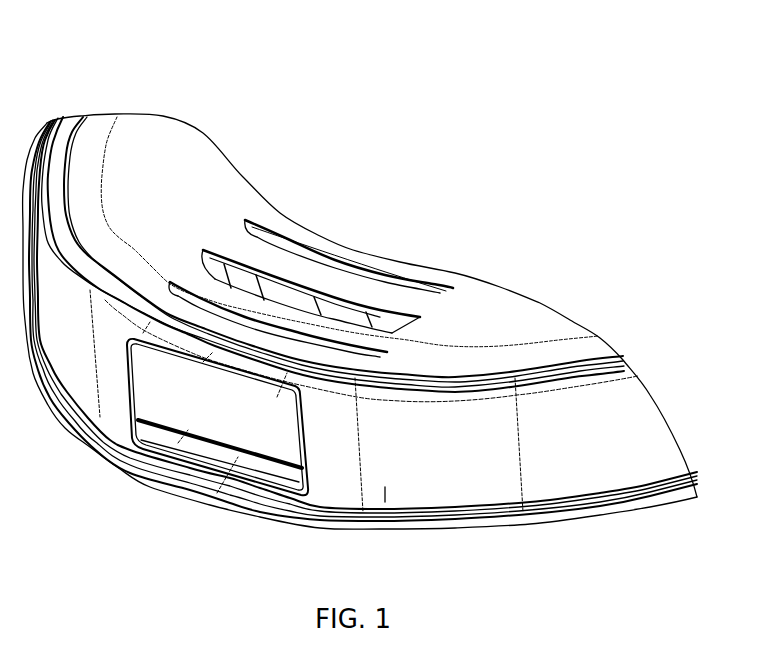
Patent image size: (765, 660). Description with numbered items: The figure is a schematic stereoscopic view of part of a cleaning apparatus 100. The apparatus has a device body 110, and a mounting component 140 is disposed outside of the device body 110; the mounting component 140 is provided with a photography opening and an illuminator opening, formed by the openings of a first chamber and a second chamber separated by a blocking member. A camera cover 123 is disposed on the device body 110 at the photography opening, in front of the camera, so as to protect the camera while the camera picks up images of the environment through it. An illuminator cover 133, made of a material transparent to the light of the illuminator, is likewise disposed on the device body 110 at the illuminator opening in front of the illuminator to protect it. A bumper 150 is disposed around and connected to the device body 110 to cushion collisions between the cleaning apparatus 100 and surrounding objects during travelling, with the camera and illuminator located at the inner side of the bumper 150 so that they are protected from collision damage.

The cleaning apparatus 100 is at (119, 56).
The device body 110 is at (472, 290).
The camera cover 123 is at (153, 478).
The illuminator cover 133 is at (213, 495).
The mounting component 140 is at (257, 510).
The bumper 150 is at (384, 504).